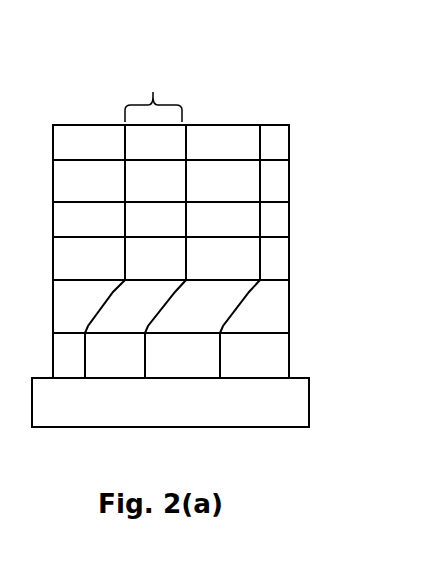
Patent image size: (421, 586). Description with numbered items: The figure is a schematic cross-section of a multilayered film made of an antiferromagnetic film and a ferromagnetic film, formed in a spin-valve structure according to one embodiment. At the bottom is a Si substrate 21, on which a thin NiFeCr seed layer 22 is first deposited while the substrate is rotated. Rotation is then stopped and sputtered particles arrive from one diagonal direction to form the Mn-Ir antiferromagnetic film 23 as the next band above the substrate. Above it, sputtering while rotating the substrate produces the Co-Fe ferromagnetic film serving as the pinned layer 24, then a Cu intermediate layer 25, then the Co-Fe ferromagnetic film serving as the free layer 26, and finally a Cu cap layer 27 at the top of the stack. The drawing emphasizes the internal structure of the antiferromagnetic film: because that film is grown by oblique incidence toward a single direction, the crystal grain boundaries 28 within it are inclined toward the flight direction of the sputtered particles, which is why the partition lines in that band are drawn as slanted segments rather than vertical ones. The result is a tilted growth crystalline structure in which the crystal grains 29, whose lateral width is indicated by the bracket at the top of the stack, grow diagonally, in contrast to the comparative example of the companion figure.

The Si substrate 21 is at (265, 408).
The first layer 22 is at (265, 355).
The antiferromagnetic film 23 is at (267, 298).
The ferromagnetic film (pinned layer) 24 is at (280, 253).
The intermediate layer 25 is at (277, 215).
The ferromagnetic film (free layer) 26 is at (280, 180).
The cap layer 27 is at (282, 133).
The crystal grain boundaries 28 is at (187, 148).
The crystal grains 29 is at (153, 92).